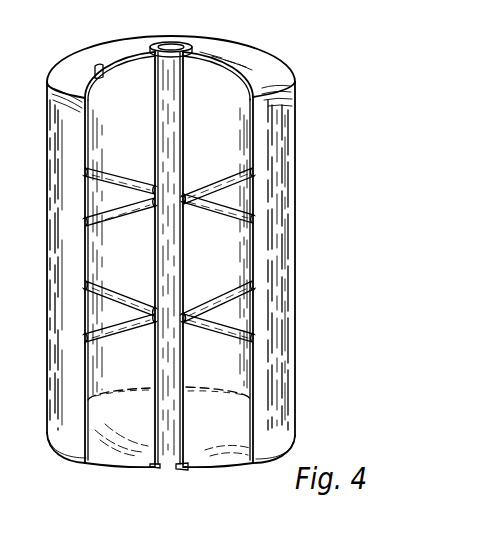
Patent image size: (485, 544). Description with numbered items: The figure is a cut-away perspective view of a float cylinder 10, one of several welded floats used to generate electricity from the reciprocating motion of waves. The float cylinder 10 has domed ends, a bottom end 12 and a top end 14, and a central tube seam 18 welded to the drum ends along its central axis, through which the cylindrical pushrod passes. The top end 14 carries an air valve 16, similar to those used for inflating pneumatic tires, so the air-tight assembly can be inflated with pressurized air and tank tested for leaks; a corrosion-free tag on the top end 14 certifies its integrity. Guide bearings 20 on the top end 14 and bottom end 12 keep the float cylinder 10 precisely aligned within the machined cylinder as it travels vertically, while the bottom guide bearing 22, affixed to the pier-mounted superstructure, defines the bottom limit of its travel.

The float cylinder 10 is at (283, 153).
The bottom end 12 is at (290, 448).
The top end 14 is at (250, 60).
The air valve 16 is at (95, 70).
The central tube seam 18 is at (163, 464).
The guide bearings 20 is at (179, 42).
The bottom guide bearing 22 is at (181, 469).